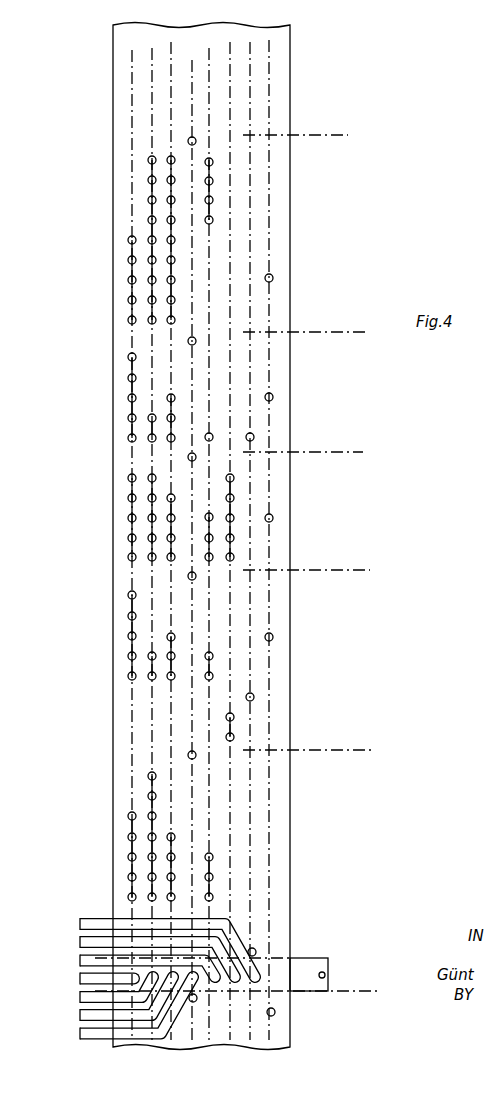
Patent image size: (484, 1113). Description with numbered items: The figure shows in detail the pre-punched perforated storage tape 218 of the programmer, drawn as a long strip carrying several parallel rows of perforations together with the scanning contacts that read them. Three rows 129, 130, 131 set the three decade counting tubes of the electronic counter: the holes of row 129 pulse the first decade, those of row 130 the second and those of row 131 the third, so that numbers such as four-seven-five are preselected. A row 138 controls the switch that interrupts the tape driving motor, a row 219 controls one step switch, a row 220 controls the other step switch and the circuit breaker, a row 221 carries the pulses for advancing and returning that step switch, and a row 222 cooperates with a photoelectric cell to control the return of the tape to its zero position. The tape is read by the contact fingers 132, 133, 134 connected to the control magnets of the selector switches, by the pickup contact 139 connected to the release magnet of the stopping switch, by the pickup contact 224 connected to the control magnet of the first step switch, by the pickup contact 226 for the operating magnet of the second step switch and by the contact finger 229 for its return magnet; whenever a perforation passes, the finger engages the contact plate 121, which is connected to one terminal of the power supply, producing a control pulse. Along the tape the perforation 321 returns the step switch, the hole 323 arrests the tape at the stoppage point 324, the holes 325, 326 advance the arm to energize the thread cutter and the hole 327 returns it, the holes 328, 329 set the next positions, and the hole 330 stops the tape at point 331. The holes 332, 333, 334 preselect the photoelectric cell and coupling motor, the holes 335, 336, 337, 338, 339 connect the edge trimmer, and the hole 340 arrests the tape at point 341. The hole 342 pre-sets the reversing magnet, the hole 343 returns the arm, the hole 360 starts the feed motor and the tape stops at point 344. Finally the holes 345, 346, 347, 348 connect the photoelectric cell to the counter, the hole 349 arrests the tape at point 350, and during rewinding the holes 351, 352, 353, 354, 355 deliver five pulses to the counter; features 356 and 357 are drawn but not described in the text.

The contact plate 121 is at (327, 968).
The row 129 is at (132, 82).
The row 130 is at (152, 112).
The row 131 is at (171, 142).
The contact finger 132 is at (90, 978).
The contact finger 133 is at (90, 997).
The contact finger 134 is at (90, 1015).
The row 138 is at (192, 78).
The pickup contact 139 is at (90, 1033).
The tape 218 is at (118, 213).
The row 219 is at (210, 95).
The row 220 is at (230, 112).
The row 221 is at (250, 127).
The row 222 is at (270, 157).
The pickup contact 224 is at (90, 960).
The pickup contact 226 is at (90, 942).
The contact finger 229 is at (92, 925).
The perforation 321 is at (256, 952).
The hole 323 is at (188, 755).
The stoppage point 324 is at (350, 751).
The hole 325 is at (234, 737).
The hole 326 is at (234, 717).
The hole 327 is at (254, 697).
The hole 328 is at (213, 676).
The hole 329 is at (213, 656).
The hole 330 is at (188, 576).
The point 331 is at (347, 571).
The hole 332 is at (207, 556).
The hole 333 is at (207, 537).
The hole 334 is at (207, 515).
The hole 335 is at (234, 557).
The hole 336 is at (234, 538).
The hole 337 is at (234, 518).
The hole 338 is at (234, 498).
The hole 339 is at (234, 478).
The hole 340 is at (188, 457).
The point 341 is at (343, 453).
The hole 342 is at (213, 437).
The hole 343 is at (254, 437).
The point 344 is at (335, 333).
The hole 345 is at (213, 220).
The hole 346 is at (213, 200).
The hole 347 is at (213, 181).
The hole 348 is at (213, 162).
The hole 349 is at (190, 138).
The point 350 is at (335, 136).
The hole 351 is at (273, 278).
The hole 352 is at (273, 397).
The hole 353 is at (273, 518).
The hole 354 is at (273, 637).
The hole 355 is at (275, 1013).
The contact hole 356 is at (196, 1000).
The connection line 357 is at (375, 986).
The hole 360 is at (188, 341).